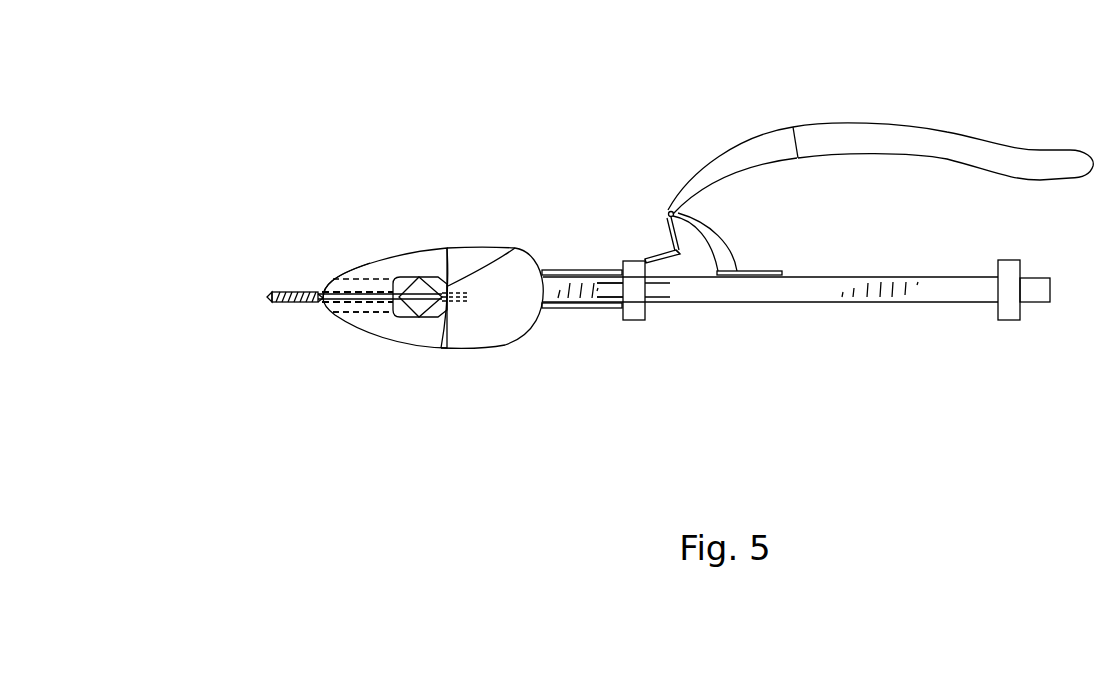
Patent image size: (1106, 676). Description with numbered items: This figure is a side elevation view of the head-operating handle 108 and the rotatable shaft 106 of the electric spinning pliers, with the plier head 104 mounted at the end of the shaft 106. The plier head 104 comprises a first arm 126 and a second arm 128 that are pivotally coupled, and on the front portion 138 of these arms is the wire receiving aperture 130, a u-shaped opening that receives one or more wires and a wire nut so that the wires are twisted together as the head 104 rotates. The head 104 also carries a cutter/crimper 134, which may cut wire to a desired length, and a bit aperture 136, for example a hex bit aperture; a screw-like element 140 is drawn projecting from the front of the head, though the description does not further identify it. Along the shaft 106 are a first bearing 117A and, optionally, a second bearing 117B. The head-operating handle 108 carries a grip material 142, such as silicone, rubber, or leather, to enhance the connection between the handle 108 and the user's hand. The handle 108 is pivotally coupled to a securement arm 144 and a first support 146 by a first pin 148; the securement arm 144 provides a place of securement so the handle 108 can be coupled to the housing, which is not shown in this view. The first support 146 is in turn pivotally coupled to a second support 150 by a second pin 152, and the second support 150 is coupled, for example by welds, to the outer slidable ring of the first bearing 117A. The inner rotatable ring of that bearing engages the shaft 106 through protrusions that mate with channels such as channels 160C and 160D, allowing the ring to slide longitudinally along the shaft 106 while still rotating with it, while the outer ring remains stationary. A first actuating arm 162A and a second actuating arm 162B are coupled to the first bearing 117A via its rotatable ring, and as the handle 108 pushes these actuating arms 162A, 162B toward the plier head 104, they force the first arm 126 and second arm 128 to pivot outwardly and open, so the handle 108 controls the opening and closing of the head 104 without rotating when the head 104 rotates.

The plier head 104 is at (512, 330).
The rotatable shaft 106 is at (567, 307).
The head-operating handle 108 is at (762, 147).
The first bearing 117A is at (637, 310).
The second bearing 117B is at (1010, 312).
The first arm 126 is at (383, 270).
The second arm 128 is at (352, 318).
The wire receiving aperture 130 is at (309, 303).
The cutter/crimper 134 is at (440, 337).
The bit aperture 136 is at (449, 282).
The front portion 138 is at (327, 276).
The screw 140 is at (280, 292).
The grip material 142 is at (977, 147).
The securement arm 144 is at (727, 243).
The first support 146 is at (663, 228).
The first pin 148 is at (673, 210).
The second support 150 is at (664, 240).
The second pin 152 is at (682, 256).
The channel 160C is at (632, 321).
The channel 160D is at (613, 282).
The first actuating arm 162A is at (580, 270).
The second actuating arm 162B is at (553, 308).